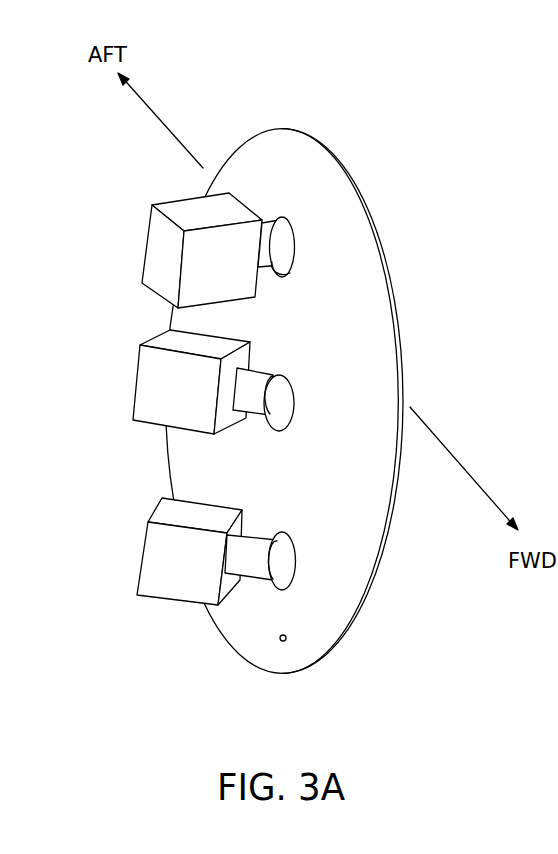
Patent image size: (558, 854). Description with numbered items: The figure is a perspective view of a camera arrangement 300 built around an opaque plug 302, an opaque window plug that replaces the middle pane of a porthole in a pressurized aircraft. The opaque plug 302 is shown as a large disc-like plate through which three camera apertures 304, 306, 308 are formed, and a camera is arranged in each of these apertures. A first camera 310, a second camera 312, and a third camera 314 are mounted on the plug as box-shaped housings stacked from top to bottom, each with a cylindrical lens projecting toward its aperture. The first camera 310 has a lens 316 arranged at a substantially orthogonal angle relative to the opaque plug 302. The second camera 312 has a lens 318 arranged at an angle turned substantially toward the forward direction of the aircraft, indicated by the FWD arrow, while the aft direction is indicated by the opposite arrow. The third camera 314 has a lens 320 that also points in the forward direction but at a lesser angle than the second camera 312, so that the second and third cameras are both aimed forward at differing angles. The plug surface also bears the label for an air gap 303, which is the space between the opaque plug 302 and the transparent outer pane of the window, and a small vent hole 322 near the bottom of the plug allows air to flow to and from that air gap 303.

The camera arrangement 300 is at (265, 369).
The opaque plug 302 is at (273, 145).
The air gap 303 is at (245, 477).
The camera aperture 304 is at (295, 236).
The camera aperture 306 is at (295, 398).
The camera aperture 308 is at (295, 567).
The first camera 310 is at (162, 242).
The second camera 312 is at (162, 383).
The third camera 314 is at (158, 557).
The lens 316 is at (279, 244).
The lens 318 is at (250, 383).
The lens 320 is at (248, 550).
The vent hole 322 is at (278, 637).